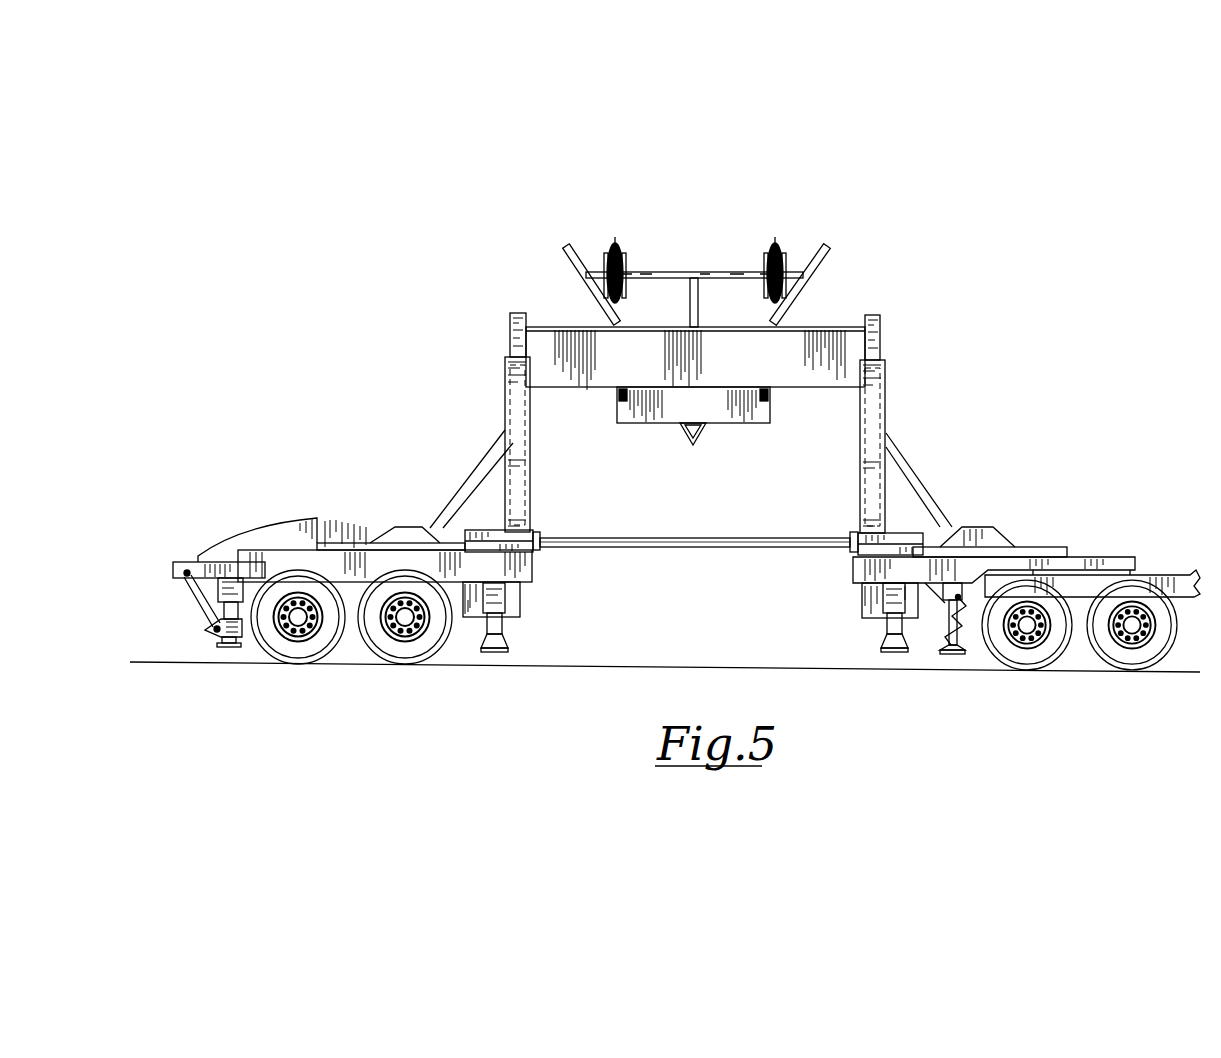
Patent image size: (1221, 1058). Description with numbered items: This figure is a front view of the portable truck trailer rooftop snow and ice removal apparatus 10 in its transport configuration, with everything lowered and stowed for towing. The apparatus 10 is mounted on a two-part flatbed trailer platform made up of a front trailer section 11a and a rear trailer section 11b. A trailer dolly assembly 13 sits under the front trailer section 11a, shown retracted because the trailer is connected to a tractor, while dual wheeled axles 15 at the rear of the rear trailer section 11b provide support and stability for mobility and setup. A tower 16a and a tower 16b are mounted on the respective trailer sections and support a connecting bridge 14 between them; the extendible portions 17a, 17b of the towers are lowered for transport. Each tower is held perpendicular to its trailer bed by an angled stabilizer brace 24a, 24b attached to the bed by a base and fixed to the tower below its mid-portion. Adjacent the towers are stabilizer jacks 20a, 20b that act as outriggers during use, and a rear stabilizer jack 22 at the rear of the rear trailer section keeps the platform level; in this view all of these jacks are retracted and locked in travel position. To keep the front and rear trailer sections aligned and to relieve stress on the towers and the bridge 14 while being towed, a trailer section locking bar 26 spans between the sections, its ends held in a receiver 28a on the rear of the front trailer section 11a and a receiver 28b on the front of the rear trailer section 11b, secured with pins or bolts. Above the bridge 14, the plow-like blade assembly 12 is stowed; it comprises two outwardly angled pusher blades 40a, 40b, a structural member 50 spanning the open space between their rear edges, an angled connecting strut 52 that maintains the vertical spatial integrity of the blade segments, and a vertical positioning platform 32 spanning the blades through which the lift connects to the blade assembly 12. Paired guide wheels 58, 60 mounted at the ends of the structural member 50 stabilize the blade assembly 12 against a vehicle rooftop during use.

The portable truck trailer rooftop snow and ice removal apparatus 10 is at (410, 248).
The front trailer section 11a is at (1068, 560).
The rear trailer section 11b is at (360, 545).
The blade assembly 12 is at (721, 213).
The trailer dolly assembly 13 is at (957, 652).
The connecting bridge 14 is at (848, 338).
The dual wheeled axles 15 is at (392, 647).
The tower 16a is at (885, 390).
The tower 16b is at (507, 372).
The extendible portion of tower 17a is at (876, 345).
The extendible portion of tower 17b is at (510, 325).
The stabilizer jack 20a is at (880, 615).
The stabilizer jack 20b is at (505, 603).
The rear stabilizer jack 22 is at (215, 592).
The stabilizer brace 24a is at (917, 480).
The stabilizer brace 24b is at (478, 470).
The trailer section locking bar 26 is at (710, 548).
The receiver 28a is at (848, 537).
The receiver 28b is at (556, 556).
The vertical positioning platform 32 is at (680, 425).
The pusher blade 40a is at (828, 256).
The pusher blade 40b is at (573, 262).
The structural member 50 is at (660, 272).
The angled connecting strut 52 is at (692, 295).
The guide wheel 58 is at (773, 243).
The guide wheel 60 is at (613, 243).